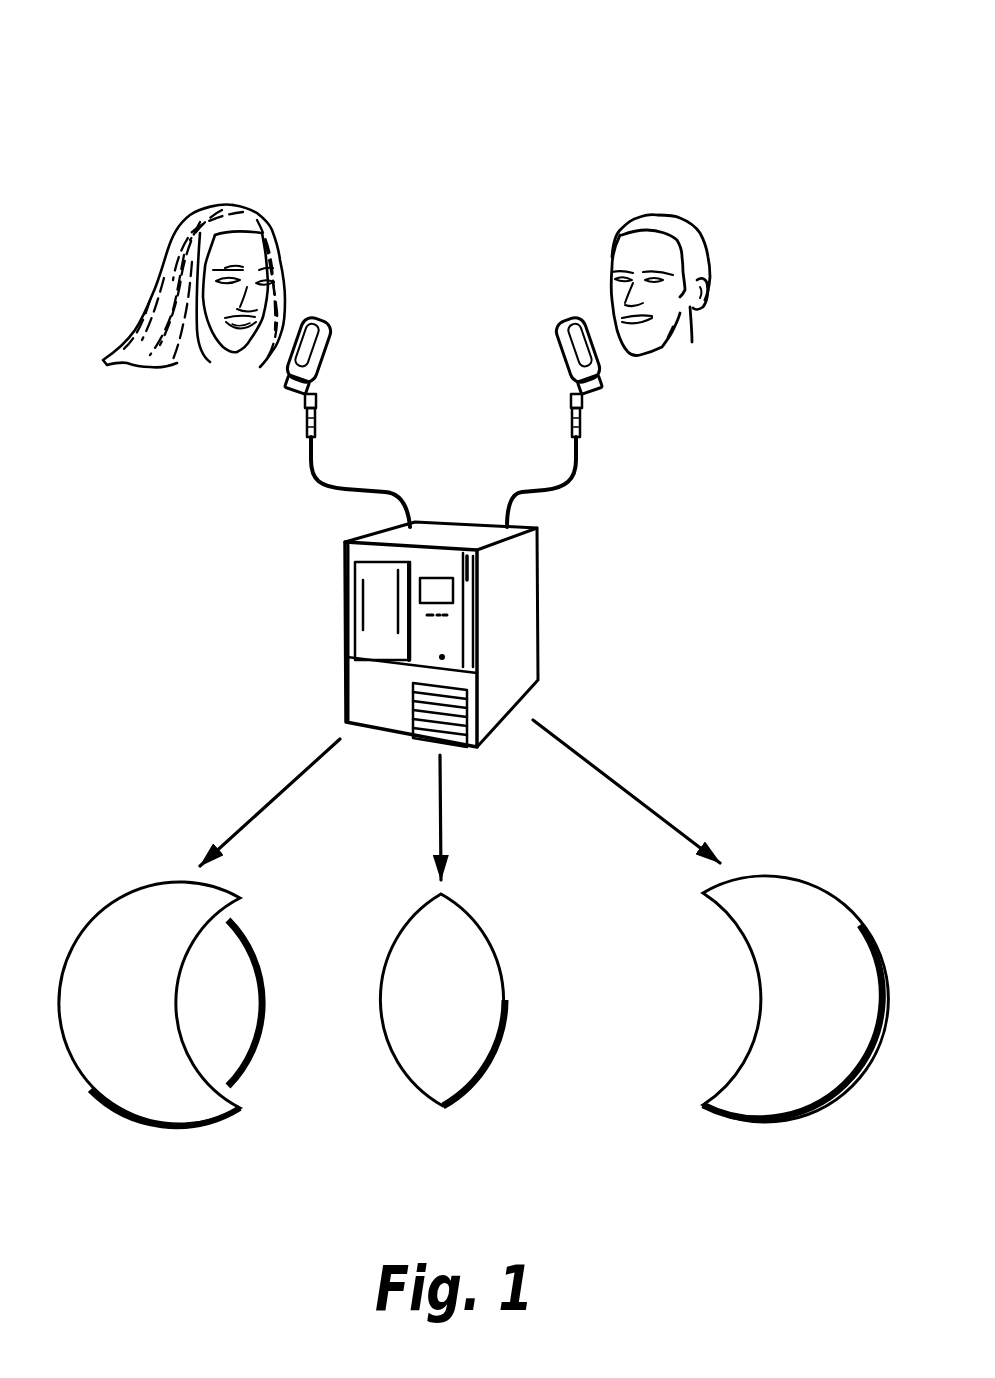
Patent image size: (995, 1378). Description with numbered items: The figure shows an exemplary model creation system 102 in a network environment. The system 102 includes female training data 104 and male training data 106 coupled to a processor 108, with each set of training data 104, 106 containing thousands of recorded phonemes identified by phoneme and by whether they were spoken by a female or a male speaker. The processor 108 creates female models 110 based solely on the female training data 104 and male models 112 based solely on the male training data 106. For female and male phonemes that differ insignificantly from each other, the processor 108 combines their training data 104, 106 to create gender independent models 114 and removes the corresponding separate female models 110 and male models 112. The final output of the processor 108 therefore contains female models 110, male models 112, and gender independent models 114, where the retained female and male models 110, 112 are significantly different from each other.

The model creation system 102 is at (556, 119).
The female training data 104 is at (160, 415).
The male training data 106 is at (725, 418).
The processor 108 is at (538, 605).
The female models 110 is at (183, 1128).
The male models 112 is at (783, 1127).
The gender independent (GI) models 114 is at (464, 1100).